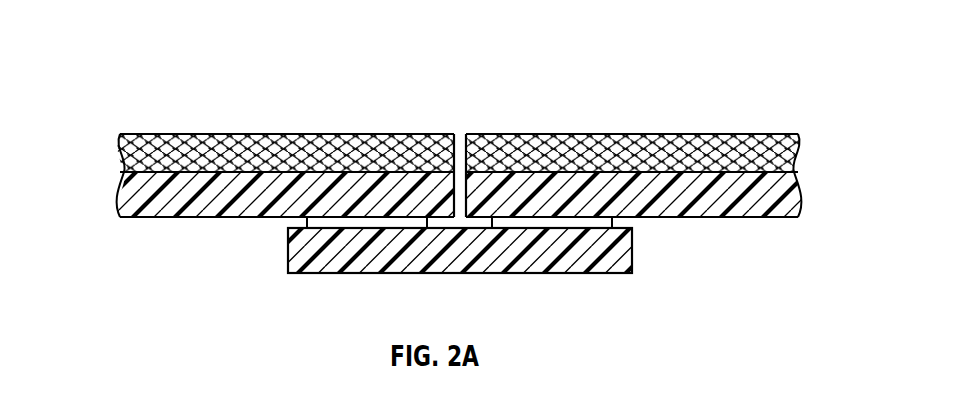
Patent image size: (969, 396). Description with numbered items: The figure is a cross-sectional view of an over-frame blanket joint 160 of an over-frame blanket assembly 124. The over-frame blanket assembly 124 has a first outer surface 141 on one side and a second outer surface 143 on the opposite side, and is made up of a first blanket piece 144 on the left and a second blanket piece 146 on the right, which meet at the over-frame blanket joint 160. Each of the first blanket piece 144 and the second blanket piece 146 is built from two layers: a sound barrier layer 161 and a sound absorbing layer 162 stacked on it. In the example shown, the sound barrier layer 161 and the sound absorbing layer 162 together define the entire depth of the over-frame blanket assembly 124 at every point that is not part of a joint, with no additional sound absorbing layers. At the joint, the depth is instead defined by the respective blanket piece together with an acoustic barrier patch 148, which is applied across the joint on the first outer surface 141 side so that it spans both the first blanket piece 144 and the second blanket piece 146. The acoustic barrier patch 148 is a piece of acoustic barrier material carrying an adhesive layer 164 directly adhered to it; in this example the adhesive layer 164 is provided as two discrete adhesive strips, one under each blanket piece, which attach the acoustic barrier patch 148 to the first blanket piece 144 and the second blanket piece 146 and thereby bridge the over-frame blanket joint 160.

The over-frame blanket assembly 124 is at (162, 42).
The first outer surface 141 is at (203, 218).
The second outer surface 143 is at (218, 134).
The first blanket piece 144 is at (157, 249).
The second blanket piece 146 is at (774, 249).
The acoustic barrier patch 148 is at (325, 274).
The over-frame blanket joint 160 is at (462, 127).
The sound barrier layer 161 is at (118, 200).
The sound absorbing layer 162 is at (127, 156).
The adhesive layer 164 is at (365, 220).